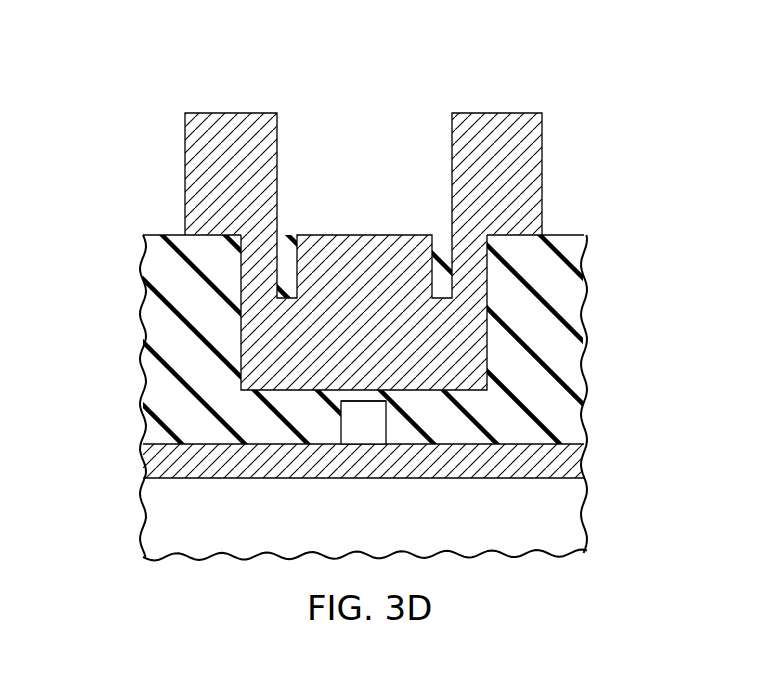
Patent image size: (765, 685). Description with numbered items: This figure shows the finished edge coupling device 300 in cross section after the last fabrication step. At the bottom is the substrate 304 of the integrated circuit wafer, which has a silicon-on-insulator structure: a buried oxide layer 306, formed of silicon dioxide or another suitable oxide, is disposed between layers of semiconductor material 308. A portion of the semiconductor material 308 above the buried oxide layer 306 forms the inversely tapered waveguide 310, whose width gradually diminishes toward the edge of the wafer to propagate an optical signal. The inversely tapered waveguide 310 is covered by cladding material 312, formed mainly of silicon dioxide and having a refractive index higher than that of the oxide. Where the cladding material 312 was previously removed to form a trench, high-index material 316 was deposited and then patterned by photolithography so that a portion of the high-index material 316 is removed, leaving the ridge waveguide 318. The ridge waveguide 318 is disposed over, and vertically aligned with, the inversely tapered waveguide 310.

The edge coupling device 300 is at (97, 76).
The substrate 304 is at (125, 402).
The buried oxide layer 306 is at (585, 460).
The semiconductor material 308 is at (272, 525).
The inversely tapered waveguide 310 is at (355, 401).
The cladding material 312 is at (143, 360).
The high-index material 316 is at (185, 183).
The ridge waveguide 318 is at (349, 171).